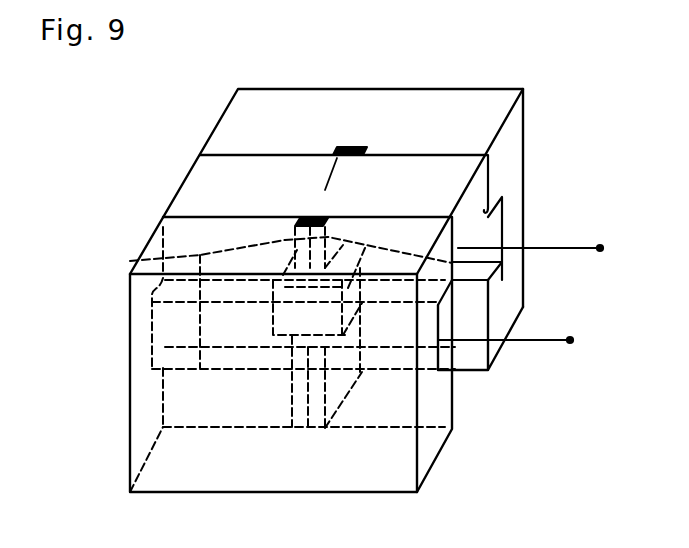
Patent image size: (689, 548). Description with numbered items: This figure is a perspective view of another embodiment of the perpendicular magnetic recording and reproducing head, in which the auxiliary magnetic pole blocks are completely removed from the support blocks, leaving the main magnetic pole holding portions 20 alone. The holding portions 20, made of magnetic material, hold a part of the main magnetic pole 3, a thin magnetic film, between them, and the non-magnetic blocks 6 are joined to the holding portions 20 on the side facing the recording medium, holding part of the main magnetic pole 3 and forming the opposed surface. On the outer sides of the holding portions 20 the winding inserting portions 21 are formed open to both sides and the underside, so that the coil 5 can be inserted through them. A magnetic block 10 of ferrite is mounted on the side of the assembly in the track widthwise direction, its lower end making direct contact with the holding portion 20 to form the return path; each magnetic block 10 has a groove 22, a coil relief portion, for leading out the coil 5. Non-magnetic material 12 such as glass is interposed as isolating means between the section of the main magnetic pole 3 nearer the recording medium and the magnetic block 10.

The main magnetic pole 3 is at (330, 198).
The coil 5 is at (533, 343).
The non-magnetic block 6 is at (187, 200).
The magnetic block 10 is at (228, 128).
The non-magnetic material 12 is at (310, 218).
The main magnetic pole holding portion 20 is at (289, 385).
The winding inserting portion 21 is at (225, 407).
The groove 22 is at (488, 231).